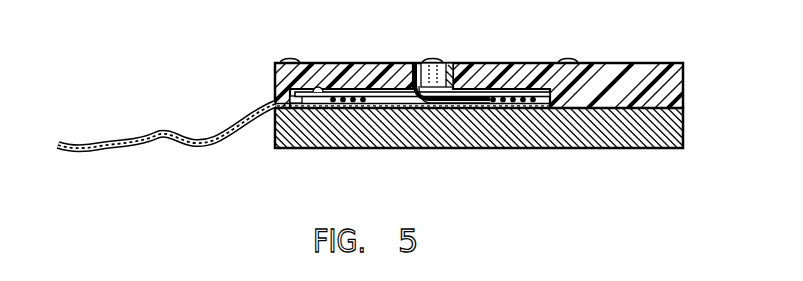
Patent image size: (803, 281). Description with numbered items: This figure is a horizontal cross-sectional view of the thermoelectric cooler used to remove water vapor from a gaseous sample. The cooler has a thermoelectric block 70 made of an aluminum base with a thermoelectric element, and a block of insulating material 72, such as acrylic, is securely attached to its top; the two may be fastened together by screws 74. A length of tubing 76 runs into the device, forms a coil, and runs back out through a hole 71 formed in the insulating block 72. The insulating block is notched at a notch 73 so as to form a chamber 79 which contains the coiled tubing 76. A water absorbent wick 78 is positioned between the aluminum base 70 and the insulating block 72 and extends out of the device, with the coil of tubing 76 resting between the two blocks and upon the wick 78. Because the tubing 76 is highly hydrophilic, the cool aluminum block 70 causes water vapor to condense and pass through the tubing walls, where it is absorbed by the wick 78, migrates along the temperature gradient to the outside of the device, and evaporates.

The thermoelectric block 70 is at (683, 135).
The hole 71 is at (449, 63).
The insulating block 72 is at (683, 87).
The notch 73 is at (329, 91).
The screws 74 is at (289, 58).
The tubing 76 is at (426, 104).
The water absorbent wick 78 is at (153, 142).
The chamber 79 is at (276, 103).